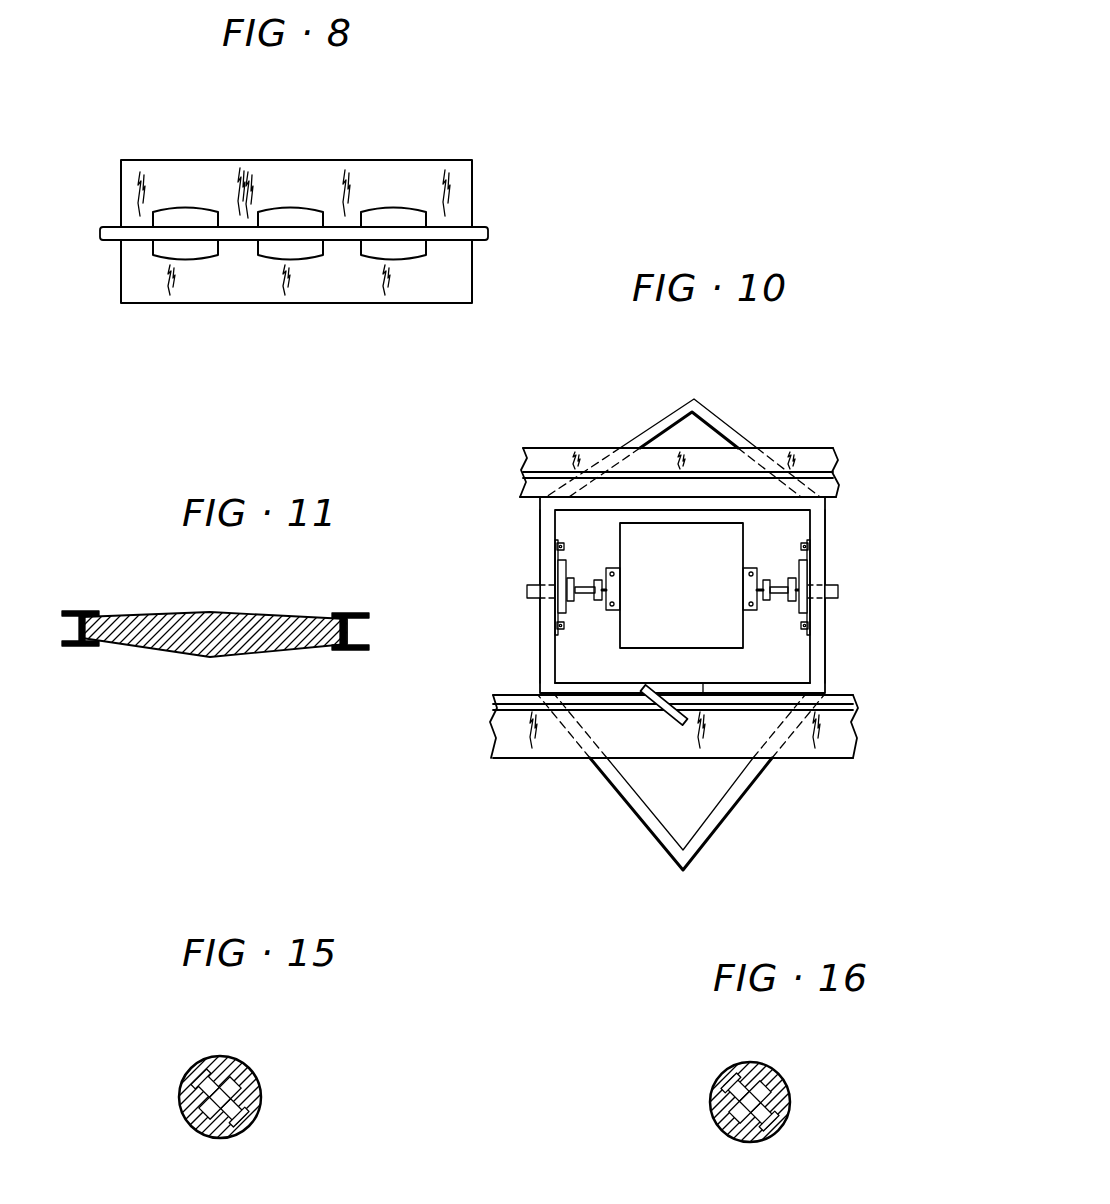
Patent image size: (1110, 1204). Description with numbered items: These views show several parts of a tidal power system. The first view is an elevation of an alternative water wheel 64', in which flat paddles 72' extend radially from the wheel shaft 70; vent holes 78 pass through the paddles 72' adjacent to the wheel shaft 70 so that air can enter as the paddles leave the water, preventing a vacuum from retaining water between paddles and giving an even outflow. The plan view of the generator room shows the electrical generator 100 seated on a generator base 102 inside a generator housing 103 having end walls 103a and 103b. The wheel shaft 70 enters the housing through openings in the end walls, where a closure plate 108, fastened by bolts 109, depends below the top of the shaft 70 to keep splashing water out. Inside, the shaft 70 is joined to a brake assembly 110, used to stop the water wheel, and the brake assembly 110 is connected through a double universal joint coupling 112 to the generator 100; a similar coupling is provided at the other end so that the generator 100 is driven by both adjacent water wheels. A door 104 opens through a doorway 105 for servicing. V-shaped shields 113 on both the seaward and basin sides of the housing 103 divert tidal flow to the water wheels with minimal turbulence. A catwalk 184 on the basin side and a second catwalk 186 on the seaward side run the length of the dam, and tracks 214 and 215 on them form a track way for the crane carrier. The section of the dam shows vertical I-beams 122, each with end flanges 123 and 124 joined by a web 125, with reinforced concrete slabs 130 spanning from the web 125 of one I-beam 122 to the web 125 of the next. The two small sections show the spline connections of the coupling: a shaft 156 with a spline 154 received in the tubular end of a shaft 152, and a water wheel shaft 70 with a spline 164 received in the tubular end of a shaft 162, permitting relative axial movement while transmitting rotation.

In FIG. 8, the water wheel 64' is at (296, 201).
In FIG. 8, the paddles 72' is at (297, 185).
In FIG. 8, the vent holes 78 is at (183, 262).
In FIG. 8, the wheel shaft 70 is at (492, 238).
In FIG. 10, the wheel shaft 70 is at (536, 588).
In FIG. 16, the wheel shaft 70 is at (723, 1118).
In FIG. 10, the second catwalk 186 is at (836, 462).
In FIG. 10, the catwalk 184 is at (860, 733).
In FIG. 10, the track 215 is at (544, 470).
In FIG. 10, the track 214 is at (505, 710).
In FIG. 10, the V-shaped shield 113 is at (728, 424).
In FIG. 10, the generator housing 103 is at (552, 692).
In FIG. 10, the end wall 103a is at (547, 516).
In FIG. 10, the end wall 103b is at (826, 518).
In FIG. 10, the electrical generator 100 is at (695, 626).
In FIG. 10, the generator base 102 is at (748, 568).
In FIG. 10, the double universal joint coupling 112 is at (590, 576).
In FIG. 10, the closure plate 108 is at (557, 548).
In FIG. 10, the bolts 109 is at (564, 548).
In FIG. 10, the brake assembly 110 is at (562, 613).
In FIG. 10, the doorway 105 is at (690, 668).
In FIG. 10, the door 104 is at (676, 723).
In FIG. 11, the slabs 130 is at (222, 650).
In FIG. 11, the web 125 is at (78, 628).
In FIG. 11, the end flange 124 is at (62, 612).
In FIG. 11, the end flange 123 is at (75, 647).
In FIG. 11, the I-beam 122 is at (80, 648).
In FIG. 15, the shaft 152 is at (240, 1063).
In FIG. 15, the spline 154 is at (244, 1100).
In FIG. 15, the shaft 156 is at (200, 1110).
In FIG. 16, the shaft 162 is at (778, 1073).
In FIG. 16, the spline 164 is at (786, 1106).